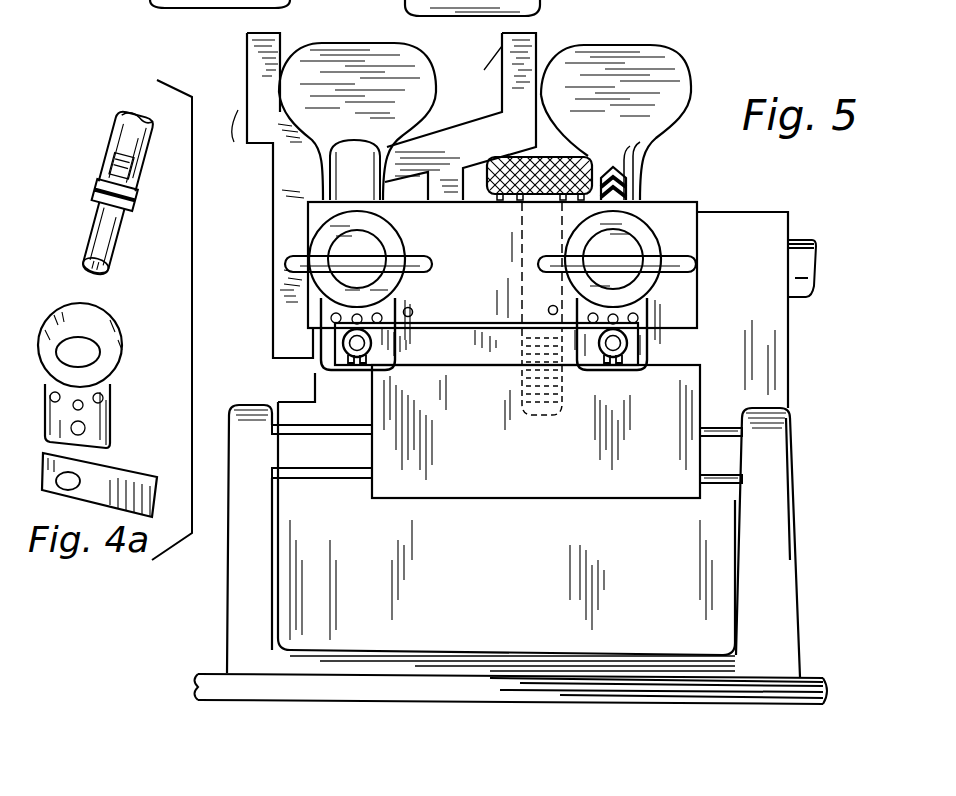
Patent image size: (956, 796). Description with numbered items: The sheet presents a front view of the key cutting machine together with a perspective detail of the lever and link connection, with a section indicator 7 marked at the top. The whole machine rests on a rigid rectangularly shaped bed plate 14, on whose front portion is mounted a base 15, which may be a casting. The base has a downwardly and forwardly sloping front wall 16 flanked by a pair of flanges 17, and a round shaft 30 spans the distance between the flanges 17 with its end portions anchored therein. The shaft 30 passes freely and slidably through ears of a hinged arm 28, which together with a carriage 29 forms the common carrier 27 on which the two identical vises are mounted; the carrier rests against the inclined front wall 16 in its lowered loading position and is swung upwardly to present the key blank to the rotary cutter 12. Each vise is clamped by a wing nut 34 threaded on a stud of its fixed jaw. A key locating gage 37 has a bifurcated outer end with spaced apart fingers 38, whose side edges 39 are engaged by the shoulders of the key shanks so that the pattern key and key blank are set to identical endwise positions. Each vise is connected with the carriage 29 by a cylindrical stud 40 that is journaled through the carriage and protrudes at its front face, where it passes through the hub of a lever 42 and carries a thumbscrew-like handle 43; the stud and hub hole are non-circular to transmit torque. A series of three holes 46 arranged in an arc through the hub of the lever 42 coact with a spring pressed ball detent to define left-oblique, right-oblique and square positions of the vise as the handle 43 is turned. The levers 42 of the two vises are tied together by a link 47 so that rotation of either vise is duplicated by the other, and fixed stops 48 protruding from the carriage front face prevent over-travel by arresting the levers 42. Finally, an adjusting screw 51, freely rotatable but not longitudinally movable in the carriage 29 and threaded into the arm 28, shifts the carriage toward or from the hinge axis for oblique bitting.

In FIG. 5, the section line 7 is at (233, 22).
In FIG. 5, the rotary cutter 12 is at (627, 187).
In FIG. 5, the bed plate 14 is at (812, 690).
In FIG. 5, the base 15 is at (217, 637).
In FIG. 5, the front wall 16 is at (508, 592).
In FIG. 5, the flanges 17 is at (252, 531).
In FIG. 5, the common carrier 27 is at (720, 250).
In FIG. 5, the hinged arm 28 is at (508, 456).
In FIG. 5, the carriage 29 is at (500, 234).
In FIG. 5, the round shaft 30 is at (348, 465).
In FIG. 5, the wing nut 34 is at (385, 100).
In FIG. 5, the key locating gage 37 is at (268, 224).
In FIG. 5, the fingers 38 is at (500, 46).
In FIG. 5, the side edge 39 is at (367, 109).
In FIG. 4A, the cylindrical stud 40 is at (110, 136).
In FIG. 4A, the lever 42 is at (112, 324).
In FIG. 5, the lever 42 is at (380, 235).
In FIG. 5, the handle 43 is at (432, 264).
In FIG. 4A, the holes 46 is at (100, 401).
In FIG. 5, the holes 46 is at (375, 322).
In FIG. 4A, the link 47 is at (130, 480).
In FIG. 5, the link 47 is at (447, 354).
In FIG. 5, the fixed stops 48 is at (547, 308).
In FIG. 5, the adjusting screw 51 is at (594, 162).